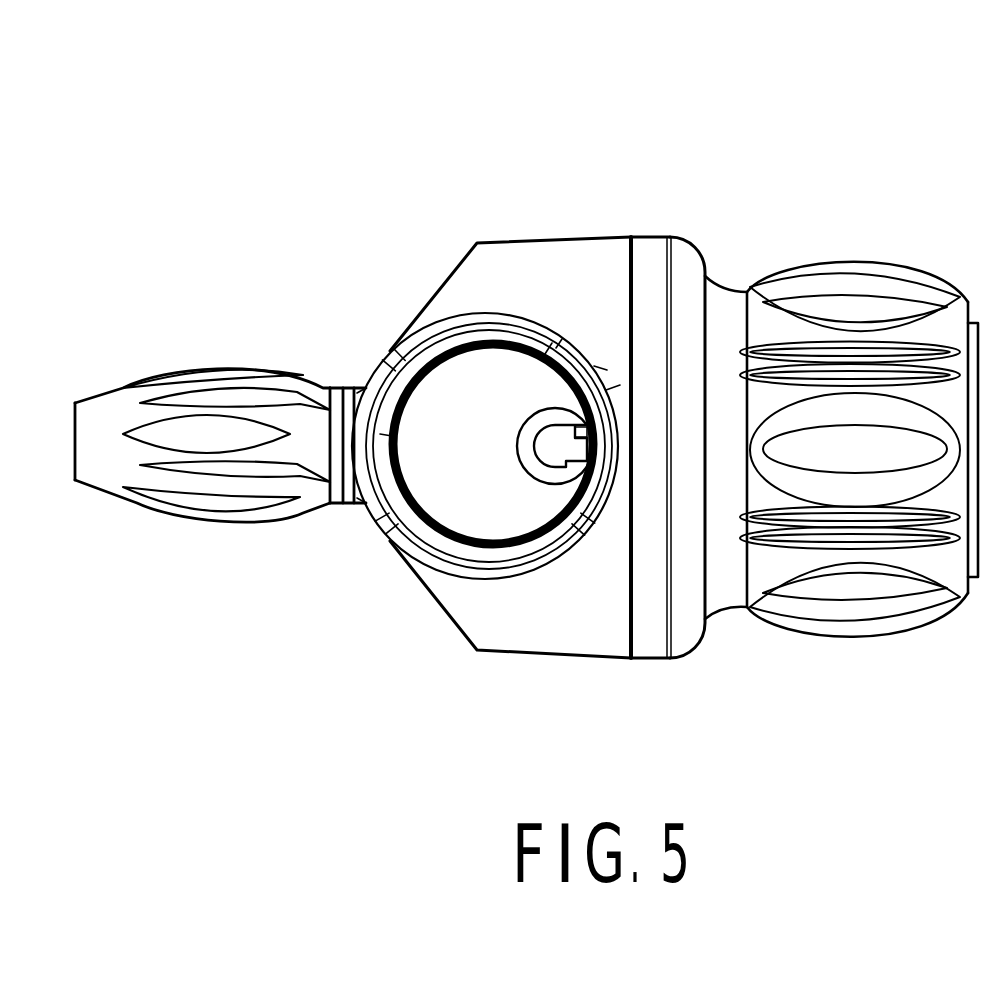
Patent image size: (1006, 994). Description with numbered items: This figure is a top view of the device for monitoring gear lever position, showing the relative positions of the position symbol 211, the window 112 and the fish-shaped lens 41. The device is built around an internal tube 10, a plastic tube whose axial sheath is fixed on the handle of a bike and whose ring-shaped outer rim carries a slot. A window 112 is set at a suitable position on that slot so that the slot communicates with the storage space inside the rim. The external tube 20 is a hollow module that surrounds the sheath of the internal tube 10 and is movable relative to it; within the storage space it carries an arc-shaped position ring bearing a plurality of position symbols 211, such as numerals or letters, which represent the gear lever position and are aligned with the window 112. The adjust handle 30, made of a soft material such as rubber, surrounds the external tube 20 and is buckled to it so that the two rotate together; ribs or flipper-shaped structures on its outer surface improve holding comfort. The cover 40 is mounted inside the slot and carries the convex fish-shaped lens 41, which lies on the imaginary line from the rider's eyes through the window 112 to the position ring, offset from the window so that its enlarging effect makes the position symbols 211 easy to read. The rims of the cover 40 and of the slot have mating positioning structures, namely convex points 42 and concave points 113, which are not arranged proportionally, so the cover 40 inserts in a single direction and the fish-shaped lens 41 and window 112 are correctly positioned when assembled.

The internal tube 10 is at (463, 277).
The external tube 20 is at (653, 260).
The adjust handle 30 is at (852, 262).
The cover 40 is at (440, 517).
The fish-shaped lens 41 is at (528, 482).
The convex points 42 is at (383, 435).
The window 112 is at (554, 467).
The concave points 113 is at (357, 392).
The position symbols 211 is at (588, 427).